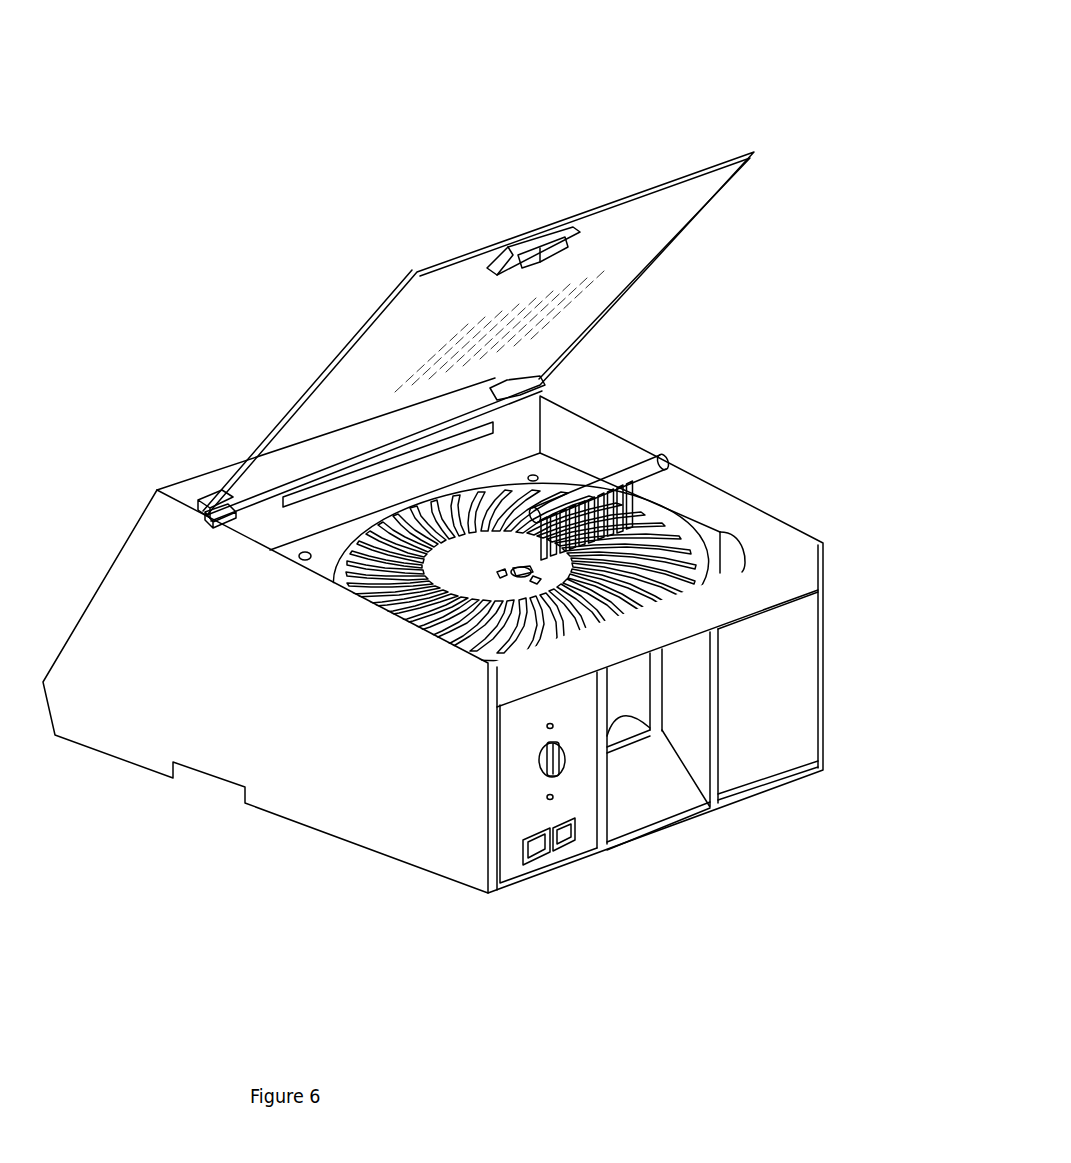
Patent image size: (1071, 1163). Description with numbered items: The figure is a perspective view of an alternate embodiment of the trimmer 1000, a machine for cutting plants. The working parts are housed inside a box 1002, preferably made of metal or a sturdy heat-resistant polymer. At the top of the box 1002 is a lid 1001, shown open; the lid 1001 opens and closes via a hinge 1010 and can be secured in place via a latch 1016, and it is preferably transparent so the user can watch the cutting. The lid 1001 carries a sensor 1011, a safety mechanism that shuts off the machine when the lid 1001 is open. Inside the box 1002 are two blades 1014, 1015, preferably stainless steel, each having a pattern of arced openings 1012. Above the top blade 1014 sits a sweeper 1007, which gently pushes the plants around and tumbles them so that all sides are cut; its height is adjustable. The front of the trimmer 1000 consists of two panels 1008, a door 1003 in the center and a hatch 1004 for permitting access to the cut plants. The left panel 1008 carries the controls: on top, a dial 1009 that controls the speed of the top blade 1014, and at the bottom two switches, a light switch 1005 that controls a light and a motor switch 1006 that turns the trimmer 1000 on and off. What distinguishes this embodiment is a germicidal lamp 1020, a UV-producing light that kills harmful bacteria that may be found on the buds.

The trimmer 1000 is at (208, 238).
The lid 1001 is at (648, 212).
The box 1002 is at (297, 742).
The door 1003 is at (637, 690).
The hatch 1004 is at (672, 795).
The light switch 1005 is at (567, 843).
The motor switch 1006 is at (523, 857).
The sweeper 1007 is at (661, 462).
The panel 1008 is at (780, 658).
The dial 1009 is at (540, 763).
The hinge 1010 is at (217, 505).
The sensor 1011 is at (207, 516).
The arced openings 1012 is at (677, 537).
The top blade 1014 is at (703, 570).
The blade 1015 is at (548, 486).
The latch 1016 is at (537, 245).
The germicidal lamp 1020 is at (315, 490).